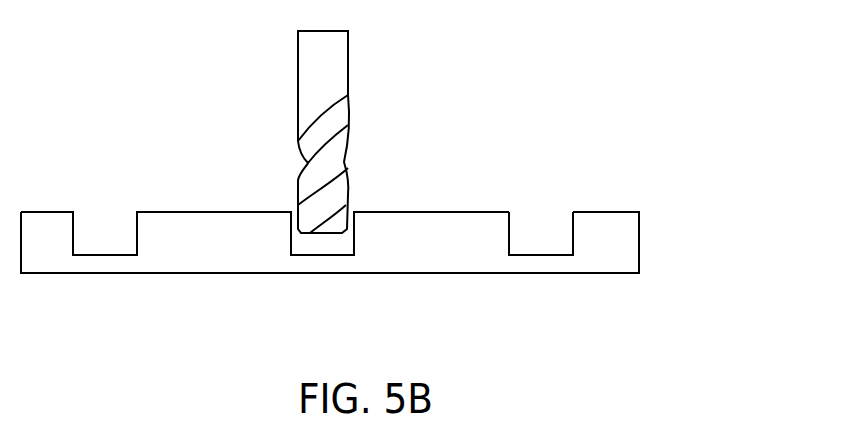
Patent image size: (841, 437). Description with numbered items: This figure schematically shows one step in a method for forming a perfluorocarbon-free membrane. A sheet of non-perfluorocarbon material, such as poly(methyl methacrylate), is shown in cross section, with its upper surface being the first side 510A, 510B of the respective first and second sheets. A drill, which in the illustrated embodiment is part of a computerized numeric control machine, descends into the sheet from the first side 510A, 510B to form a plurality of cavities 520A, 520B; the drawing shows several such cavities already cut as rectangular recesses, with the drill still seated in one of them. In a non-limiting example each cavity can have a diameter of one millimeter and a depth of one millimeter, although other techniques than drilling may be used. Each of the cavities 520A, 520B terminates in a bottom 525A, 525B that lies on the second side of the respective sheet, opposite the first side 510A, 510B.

The first side 510A is at (330, 183).
The first side 510B is at (431, 212).
The cavities 520A is at (596, 187).
The cavities 520B is at (523, 218).
The bottom 525A is at (651, 239).
The bottom 525B is at (543, 253).